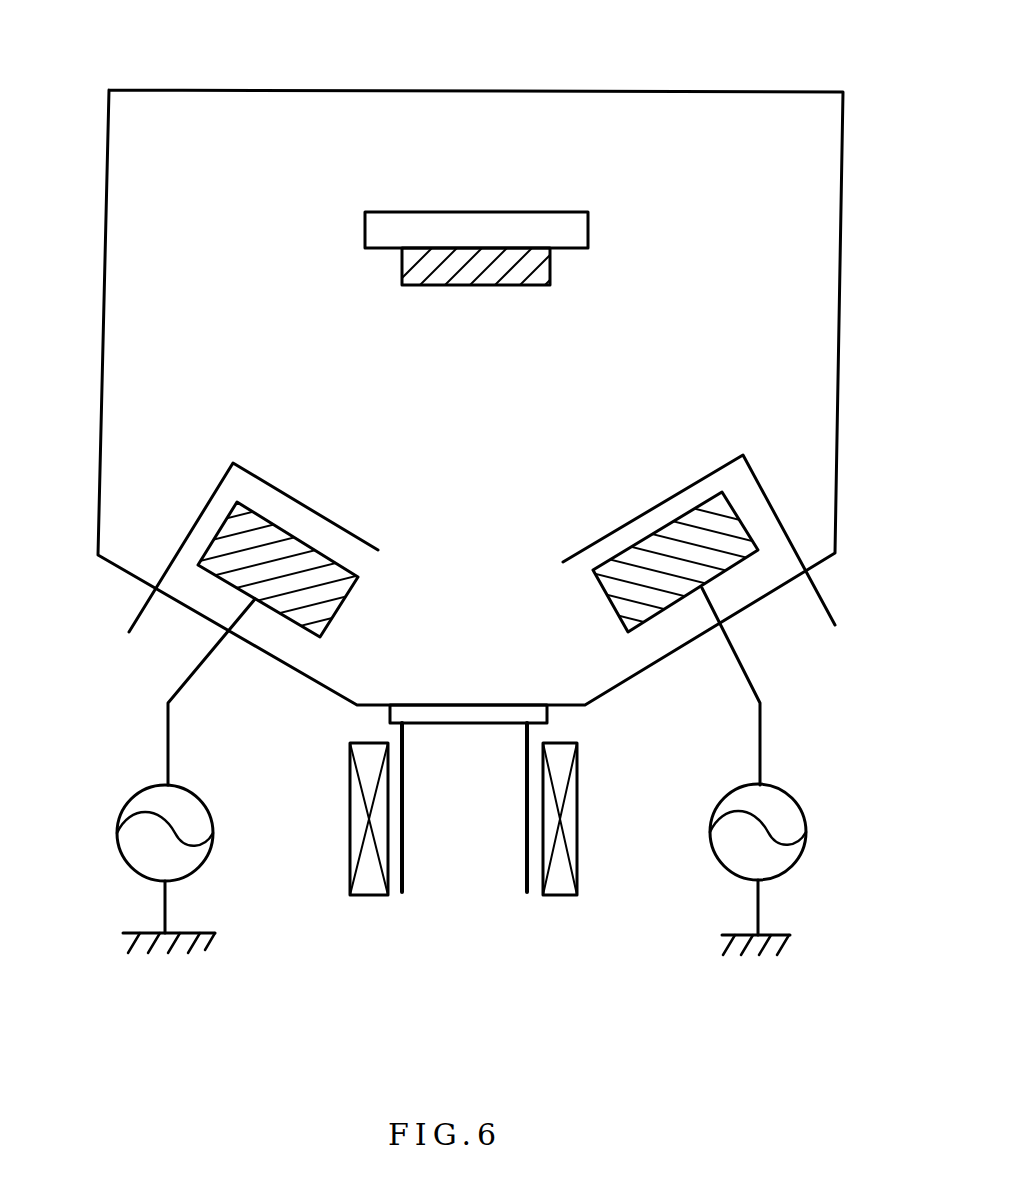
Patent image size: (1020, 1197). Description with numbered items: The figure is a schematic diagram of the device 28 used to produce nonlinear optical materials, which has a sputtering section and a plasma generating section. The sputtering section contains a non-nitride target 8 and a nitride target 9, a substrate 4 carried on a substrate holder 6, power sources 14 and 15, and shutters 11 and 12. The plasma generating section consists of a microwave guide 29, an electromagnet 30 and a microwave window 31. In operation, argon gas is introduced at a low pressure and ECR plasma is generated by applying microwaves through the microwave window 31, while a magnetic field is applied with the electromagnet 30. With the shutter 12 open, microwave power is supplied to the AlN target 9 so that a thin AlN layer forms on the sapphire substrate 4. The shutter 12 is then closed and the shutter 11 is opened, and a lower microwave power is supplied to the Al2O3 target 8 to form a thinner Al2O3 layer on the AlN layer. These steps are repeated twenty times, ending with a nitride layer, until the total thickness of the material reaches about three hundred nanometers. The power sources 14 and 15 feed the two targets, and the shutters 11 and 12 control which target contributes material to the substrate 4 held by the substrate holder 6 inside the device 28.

The device 28 is at (795, 86).
The substrate holder 6 is at (558, 213).
The substrate 4 is at (548, 270).
The shutter 11 is at (237, 575).
The shutter 12 is at (713, 568).
The non-nitride target 8 is at (305, 603).
The nitride target 9 is at (677, 588).
The power source 14 is at (150, 776).
The power source 15 is at (789, 771).
The microwave window 31 is at (540, 712).
The microwave guide 29 is at (523, 892).
The electromagnet 30 is at (568, 885).